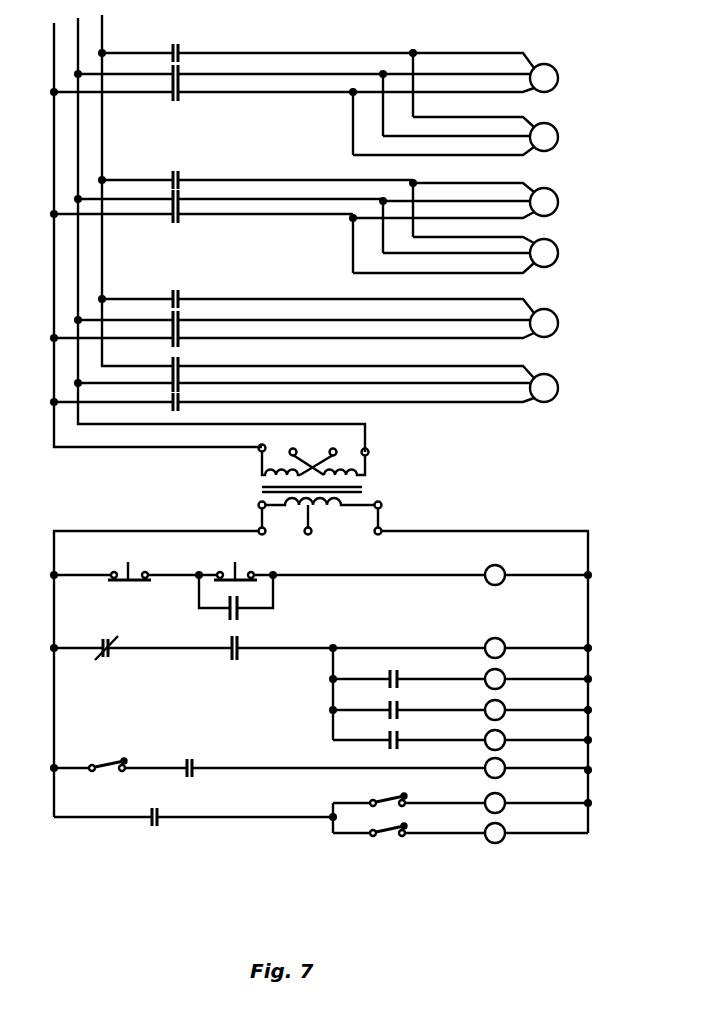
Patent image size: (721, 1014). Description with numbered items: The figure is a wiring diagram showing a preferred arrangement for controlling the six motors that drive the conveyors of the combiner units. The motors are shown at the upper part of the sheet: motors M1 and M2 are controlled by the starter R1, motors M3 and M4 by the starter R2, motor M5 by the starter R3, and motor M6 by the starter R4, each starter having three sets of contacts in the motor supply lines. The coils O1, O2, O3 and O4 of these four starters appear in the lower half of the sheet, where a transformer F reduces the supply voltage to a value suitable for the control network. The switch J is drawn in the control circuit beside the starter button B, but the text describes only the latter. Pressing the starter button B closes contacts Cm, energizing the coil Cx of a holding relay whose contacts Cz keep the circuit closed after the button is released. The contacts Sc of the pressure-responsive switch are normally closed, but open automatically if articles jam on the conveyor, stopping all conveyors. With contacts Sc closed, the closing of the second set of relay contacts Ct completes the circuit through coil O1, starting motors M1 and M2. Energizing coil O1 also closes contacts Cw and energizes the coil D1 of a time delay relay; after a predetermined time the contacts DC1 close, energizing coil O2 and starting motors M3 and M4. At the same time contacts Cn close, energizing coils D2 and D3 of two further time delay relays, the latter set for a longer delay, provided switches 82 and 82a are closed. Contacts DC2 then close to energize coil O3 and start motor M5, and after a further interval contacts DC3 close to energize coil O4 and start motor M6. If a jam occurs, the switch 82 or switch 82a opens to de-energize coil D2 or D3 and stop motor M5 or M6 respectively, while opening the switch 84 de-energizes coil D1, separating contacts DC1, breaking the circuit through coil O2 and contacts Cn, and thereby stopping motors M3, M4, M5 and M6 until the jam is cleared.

The starter R1 is at (198, 50).
The starter R2 is at (191, 180).
The starter R3 is at (188, 296).
The starter R4 is at (184, 368).
The motor M1 is at (547, 77).
The motor M2 is at (547, 136).
The motor M3 is at (547, 201).
The motor M4 is at (547, 252).
The motor M5 is at (547, 322).
The motor M6 is at (547, 387).
The transformer F is at (396, 479).
The push button switch J is at (158, 512).
The starter button B is at (233, 544).
The contacts Cm is at (252, 566).
The holding relay contacts Cz is at (245, 617).
The holding relay coil Cx is at (508, 563).
The contacts of pressure-responsive switch Sc is at (116, 640).
The relay contacts Ct is at (242, 660).
The coil O1 is at (503, 640).
The coil O2 is at (503, 671).
The coil O3 is at (503, 702).
The coil O4 is at (503, 732).
The time delay relay contacts DC1 is at (418, 670).
The time delay relay contacts DC2 is at (418, 701).
The time delay relay contacts DC3 is at (418, 731).
The switch 84 is at (106, 760).
The contacts Cw is at (196, 760).
The contacts Cn is at (160, 816).
The switch 82 is at (398, 797).
The switch 82a is at (388, 840).
The time delay relay coil D1 is at (502, 776).
The time delay relay coil D2 is at (502, 811).
The time delay relay coil D3 is at (502, 841).